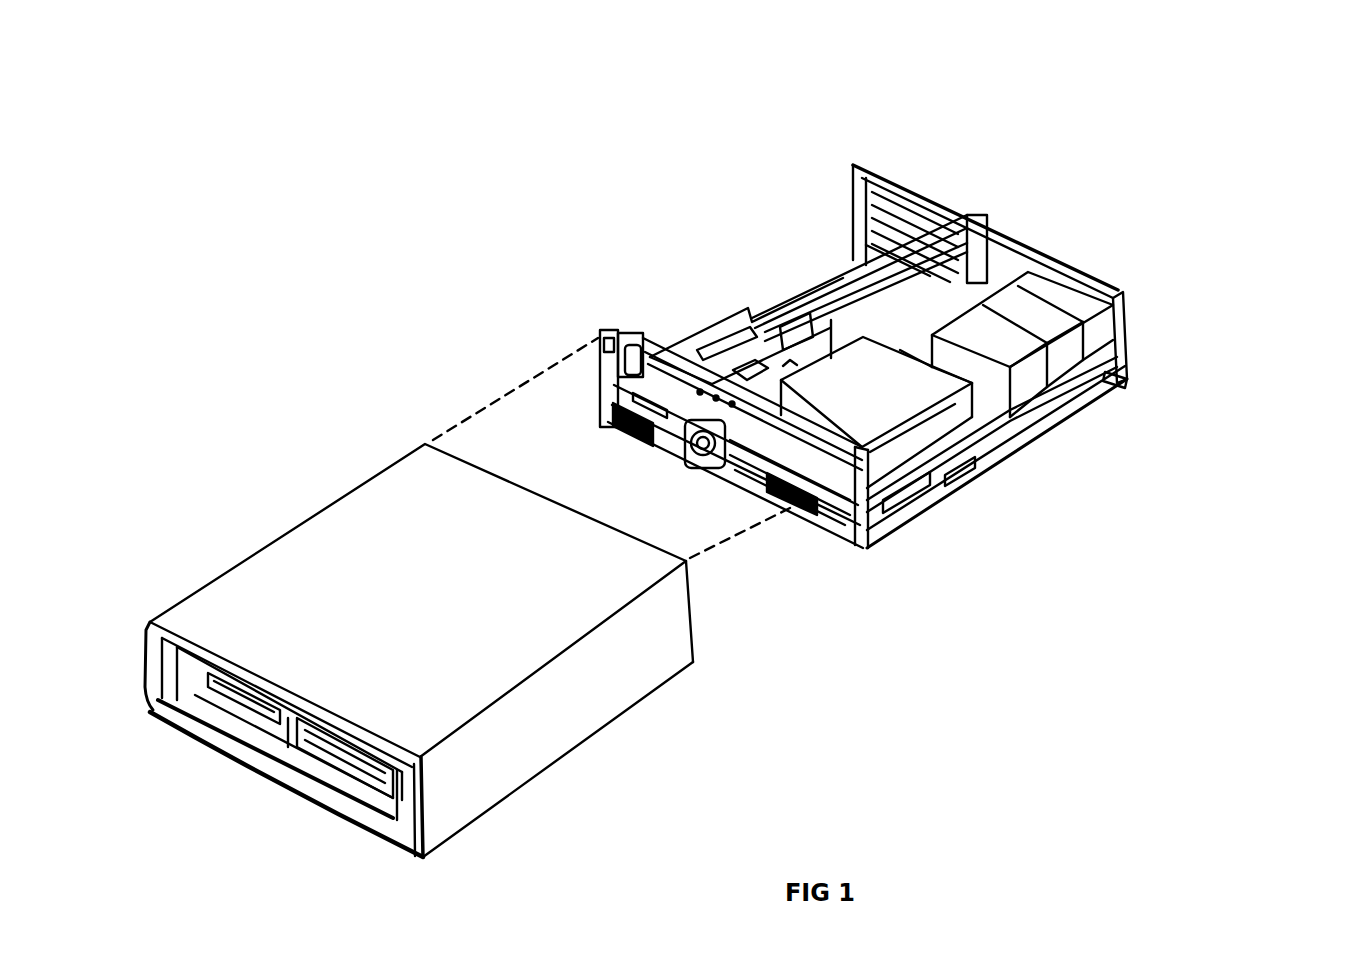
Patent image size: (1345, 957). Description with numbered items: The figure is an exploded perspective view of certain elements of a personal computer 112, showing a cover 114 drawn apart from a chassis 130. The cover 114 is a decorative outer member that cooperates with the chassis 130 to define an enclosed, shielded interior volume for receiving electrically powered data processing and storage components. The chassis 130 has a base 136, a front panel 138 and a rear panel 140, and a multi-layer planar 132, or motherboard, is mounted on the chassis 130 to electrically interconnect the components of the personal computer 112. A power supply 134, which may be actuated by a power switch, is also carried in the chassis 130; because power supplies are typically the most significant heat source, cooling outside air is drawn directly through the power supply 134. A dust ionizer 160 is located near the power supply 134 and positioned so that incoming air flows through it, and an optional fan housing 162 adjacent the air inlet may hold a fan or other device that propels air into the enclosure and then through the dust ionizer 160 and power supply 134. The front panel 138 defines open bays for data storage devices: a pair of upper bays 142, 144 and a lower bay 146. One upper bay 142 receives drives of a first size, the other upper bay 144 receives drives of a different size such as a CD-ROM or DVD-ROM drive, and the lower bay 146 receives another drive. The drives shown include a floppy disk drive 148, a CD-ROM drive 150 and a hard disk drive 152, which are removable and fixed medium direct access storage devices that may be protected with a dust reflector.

The personal computer 112 is at (1224, 81).
The cover 114 is at (432, 595).
The chassis 130 is at (903, 183).
The multi-layer planar 132 is at (893, 312).
The power supply 134 is at (1070, 403).
The base 136 is at (993, 462).
The front panel 138 is at (600, 392).
The rear panel 140 is at (1127, 333).
The upper bay 142 is at (682, 420).
The upper bay 144 is at (860, 503).
The lower bay 146 is at (833, 503).
The floppy disk drive 148 is at (683, 370).
The CD-ROM drive 150 is at (868, 400).
The hard disk drive 152 is at (950, 483).
The dust ionizer 160 is at (1127, 377).
The fan housing 162 is at (1040, 277).